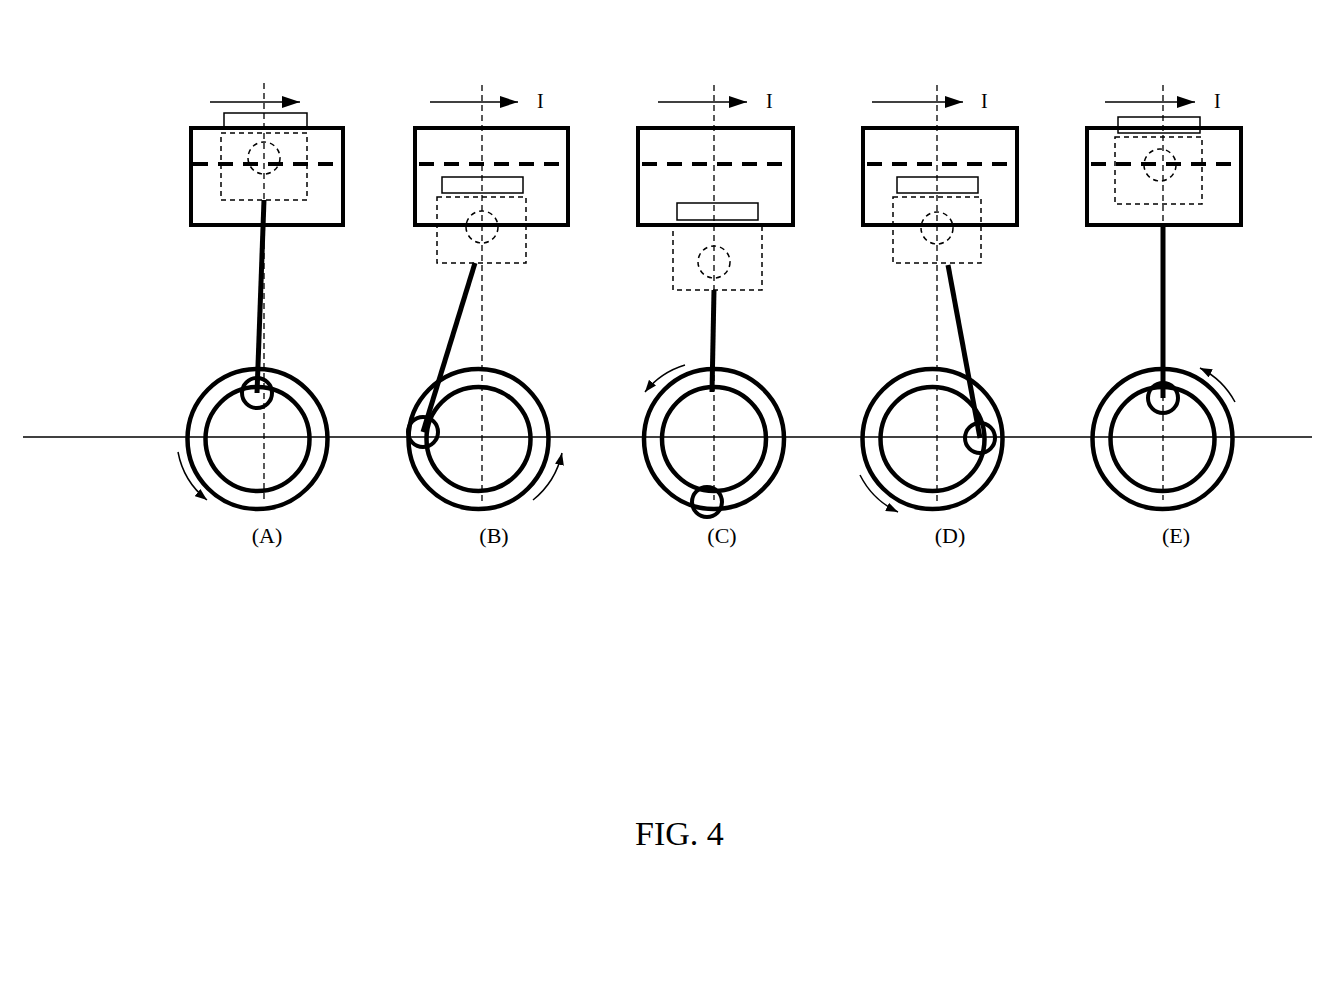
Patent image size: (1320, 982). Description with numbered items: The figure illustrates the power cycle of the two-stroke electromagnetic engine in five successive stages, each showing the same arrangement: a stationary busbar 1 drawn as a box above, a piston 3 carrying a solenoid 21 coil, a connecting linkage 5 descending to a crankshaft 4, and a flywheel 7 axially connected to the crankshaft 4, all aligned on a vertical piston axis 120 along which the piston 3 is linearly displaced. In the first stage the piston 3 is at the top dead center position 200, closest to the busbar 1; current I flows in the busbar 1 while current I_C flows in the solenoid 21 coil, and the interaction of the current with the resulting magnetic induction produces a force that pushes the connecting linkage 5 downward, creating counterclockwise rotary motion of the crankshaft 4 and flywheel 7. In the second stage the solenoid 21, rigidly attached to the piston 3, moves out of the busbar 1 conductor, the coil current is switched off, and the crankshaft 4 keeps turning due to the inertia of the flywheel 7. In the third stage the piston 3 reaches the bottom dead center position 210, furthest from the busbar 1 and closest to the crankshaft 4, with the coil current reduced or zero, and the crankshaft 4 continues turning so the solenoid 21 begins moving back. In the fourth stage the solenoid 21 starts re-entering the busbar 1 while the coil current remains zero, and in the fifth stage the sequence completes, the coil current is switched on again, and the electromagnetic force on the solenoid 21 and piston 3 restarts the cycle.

The busbar 1 is at (342, 225).
The piston 3 is at (299, 200).
The crankshaft 4 is at (210, 412).
The connecting linkage 5 is at (260, 283).
The flywheel 7 is at (315, 395).
The solenoid 21 is at (307, 118).
The piston axis 120 is at (263, 85).
The top dead center (TDC) position 200 is at (207, 117).
The bottom dead center (BDC) position 210 is at (690, 312).